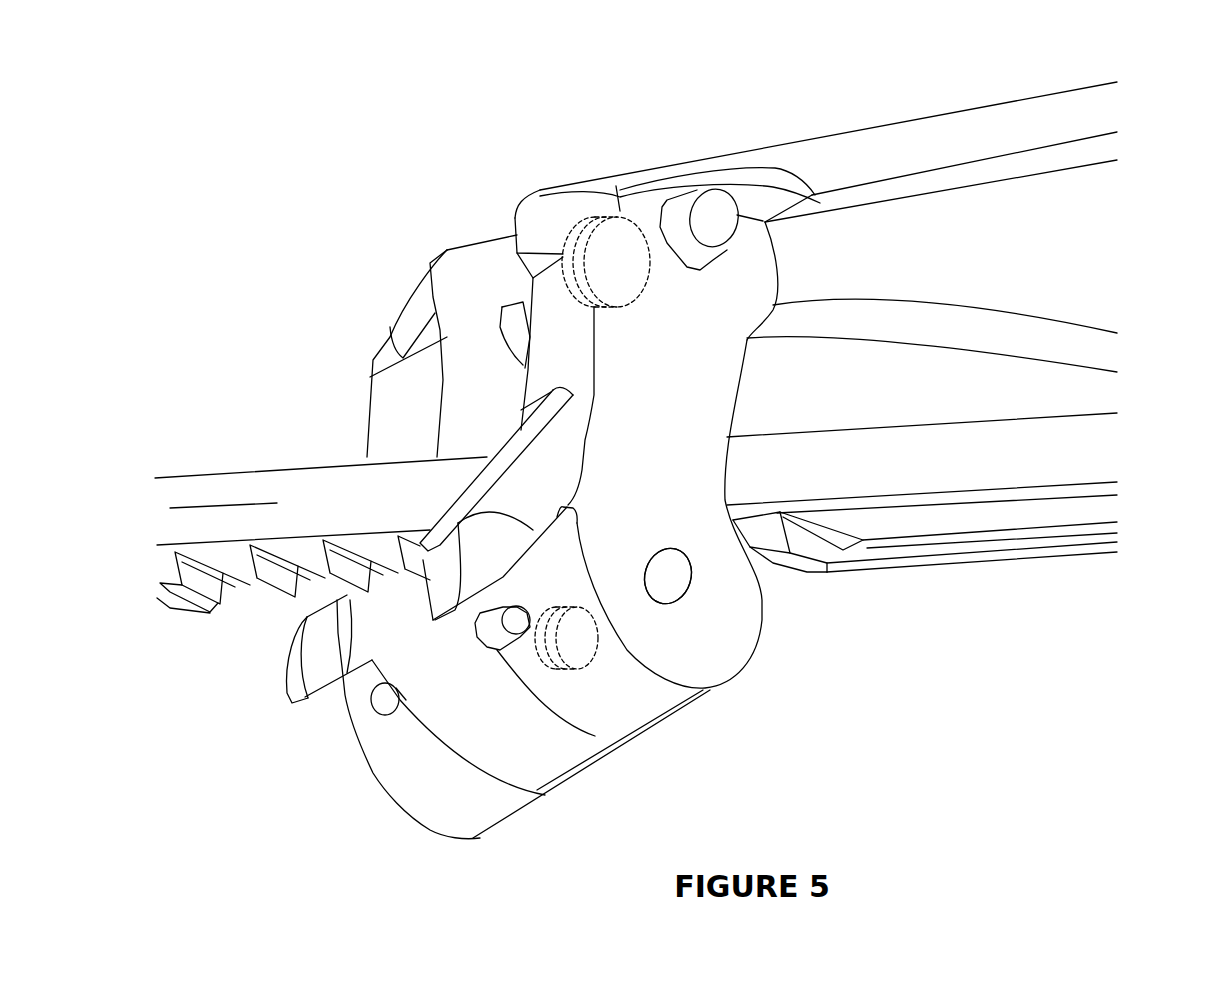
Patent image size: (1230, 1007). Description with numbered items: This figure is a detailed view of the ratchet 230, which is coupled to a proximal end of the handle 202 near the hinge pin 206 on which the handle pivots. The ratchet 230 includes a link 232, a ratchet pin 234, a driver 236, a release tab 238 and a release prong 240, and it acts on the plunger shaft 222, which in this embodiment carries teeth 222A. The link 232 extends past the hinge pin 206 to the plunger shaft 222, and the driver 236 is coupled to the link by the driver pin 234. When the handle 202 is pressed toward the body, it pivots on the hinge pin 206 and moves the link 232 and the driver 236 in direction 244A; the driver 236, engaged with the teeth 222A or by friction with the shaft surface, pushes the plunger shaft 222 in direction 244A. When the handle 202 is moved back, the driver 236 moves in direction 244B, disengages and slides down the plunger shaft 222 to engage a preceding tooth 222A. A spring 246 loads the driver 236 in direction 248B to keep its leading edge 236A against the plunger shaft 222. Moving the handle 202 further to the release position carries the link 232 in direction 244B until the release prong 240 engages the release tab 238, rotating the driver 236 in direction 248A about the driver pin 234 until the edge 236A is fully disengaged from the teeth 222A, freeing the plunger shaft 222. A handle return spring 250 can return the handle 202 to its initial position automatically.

The handle 202 is at (1102, 100).
The hinge pin 206 is at (706, 212).
The plunger shaft 222 is at (1092, 440).
The teeth 222A is at (288, 598).
The ratchet 230 is at (291, 128).
The link 232 is at (707, 653).
The ratchet pin 234 is at (678, 580).
The driver 236 is at (487, 730).
The leading edge 236A is at (402, 545).
The release tab 238 is at (387, 720).
The release prong 240 is at (312, 685).
The direction 244A is at (277, 503).
The direction 244B is at (248, 502).
The spring 246 is at (580, 667).
The direction 248A is at (669, 583).
The direction 248B is at (636, 614).
The handle return spring 250 is at (596, 243).